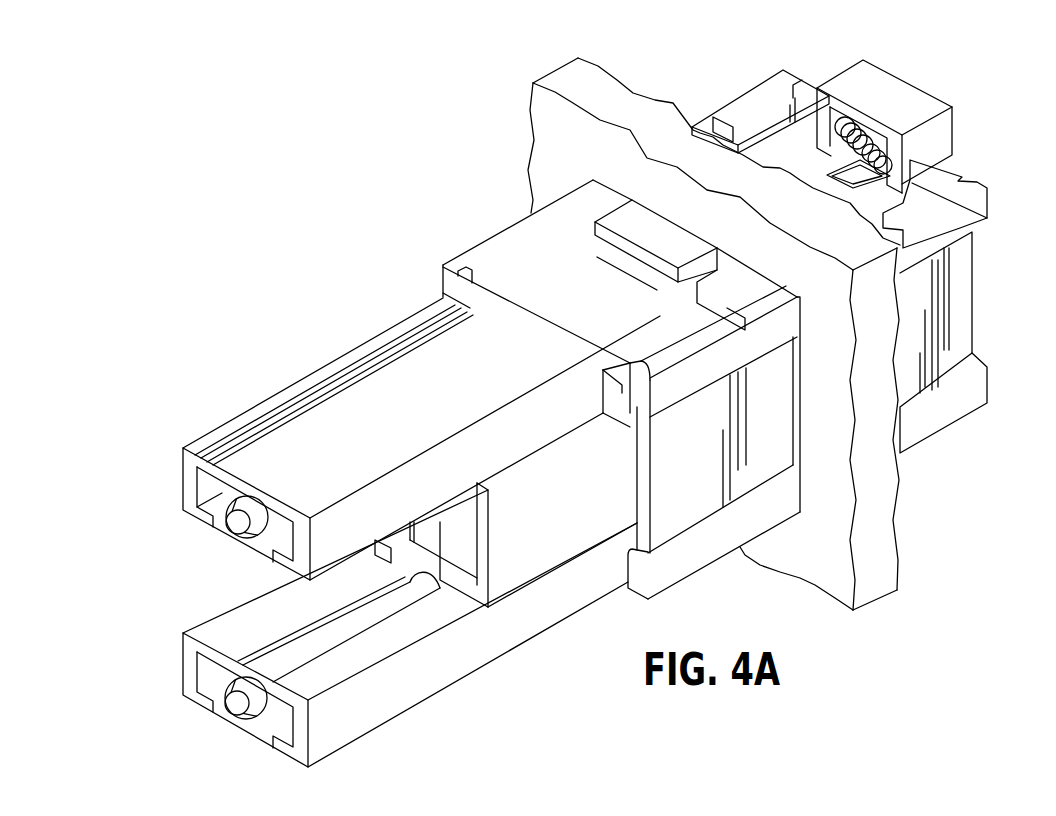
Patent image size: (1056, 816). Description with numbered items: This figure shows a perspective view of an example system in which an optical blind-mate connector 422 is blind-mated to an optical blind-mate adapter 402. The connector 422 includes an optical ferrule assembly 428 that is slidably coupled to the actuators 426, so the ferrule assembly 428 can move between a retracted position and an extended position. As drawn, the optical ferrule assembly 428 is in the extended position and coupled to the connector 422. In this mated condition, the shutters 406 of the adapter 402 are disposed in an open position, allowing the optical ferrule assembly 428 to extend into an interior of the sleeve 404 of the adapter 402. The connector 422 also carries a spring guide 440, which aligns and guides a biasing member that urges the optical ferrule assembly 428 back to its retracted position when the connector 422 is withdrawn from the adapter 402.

The optical blind-mate adapter 402 is at (722, 88).
The sleeve 404 is at (973, 298).
The shutters 406 is at (617, 373).
The optical blind-mate connector 422 is at (327, 340).
The actuators 426 is at (183, 481).
The optical ferrule assembly 428 is at (622, 487).
The spring guide 440 is at (224, 540).